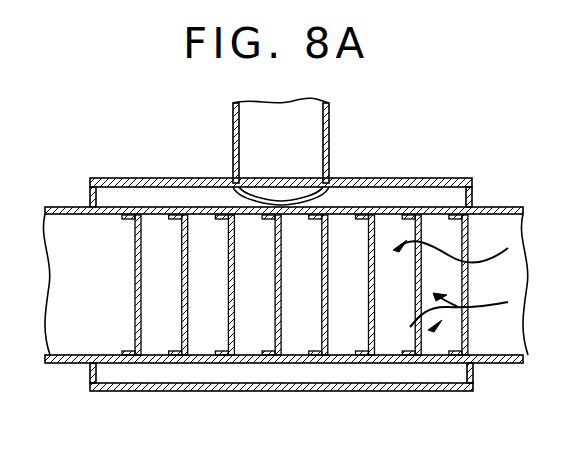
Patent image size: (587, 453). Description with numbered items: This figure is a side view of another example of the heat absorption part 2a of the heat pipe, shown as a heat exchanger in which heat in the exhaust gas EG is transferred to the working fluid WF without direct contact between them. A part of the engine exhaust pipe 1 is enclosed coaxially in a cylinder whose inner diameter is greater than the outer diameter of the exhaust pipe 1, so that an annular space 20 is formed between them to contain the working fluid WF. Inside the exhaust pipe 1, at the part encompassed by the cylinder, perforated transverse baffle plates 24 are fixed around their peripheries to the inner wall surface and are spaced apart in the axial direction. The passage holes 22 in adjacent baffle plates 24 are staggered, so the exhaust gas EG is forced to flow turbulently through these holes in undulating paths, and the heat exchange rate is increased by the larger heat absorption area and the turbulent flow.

The engine exhaust pipe 1 is at (61, 207).
The heat absorption part 2a is at (176, 178).
The annular space 20 is at (352, 190).
The working fluid WF is at (398, 200).
The passage holes 22 is at (134, 240).
The perforated transverse baffle plates 24 is at (373, 336).
The exhaust gas EG is at (500, 258).